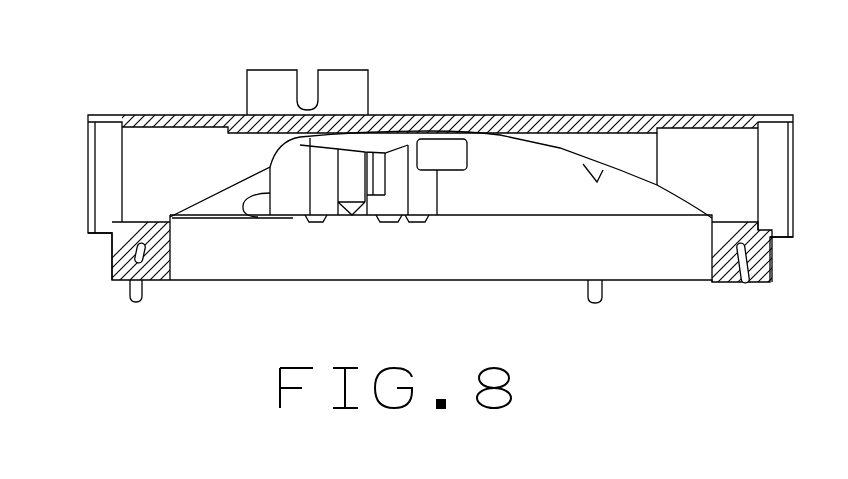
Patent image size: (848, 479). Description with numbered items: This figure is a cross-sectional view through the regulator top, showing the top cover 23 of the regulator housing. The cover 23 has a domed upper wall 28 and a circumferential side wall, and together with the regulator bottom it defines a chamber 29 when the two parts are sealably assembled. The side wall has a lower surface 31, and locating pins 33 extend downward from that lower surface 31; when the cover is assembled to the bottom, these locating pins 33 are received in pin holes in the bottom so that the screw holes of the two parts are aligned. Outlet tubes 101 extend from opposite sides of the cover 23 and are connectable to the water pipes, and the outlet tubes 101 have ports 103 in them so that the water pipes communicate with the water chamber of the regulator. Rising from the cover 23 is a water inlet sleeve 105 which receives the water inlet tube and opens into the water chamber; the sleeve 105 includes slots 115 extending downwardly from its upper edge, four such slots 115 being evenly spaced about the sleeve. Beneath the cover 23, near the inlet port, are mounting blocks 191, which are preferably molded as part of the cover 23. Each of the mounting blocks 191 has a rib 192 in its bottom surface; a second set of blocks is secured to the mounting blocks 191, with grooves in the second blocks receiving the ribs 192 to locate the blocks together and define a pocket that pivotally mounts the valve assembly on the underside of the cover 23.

The top cover 23 is at (520, 94).
The domed upper wall 28 is at (597, 182).
The chamber 29 is at (108, 247).
The lower surface 31 is at (157, 281).
The locating pins 33 is at (136, 303).
The outlet tubes 101 is at (113, 115).
The ports 103 is at (168, 193).
The water inlet sleeve 105 is at (384, 88).
The slots 115 is at (308, 86).
The mounting blocks 191 is at (328, 196).
The rib 192 is at (318, 223).